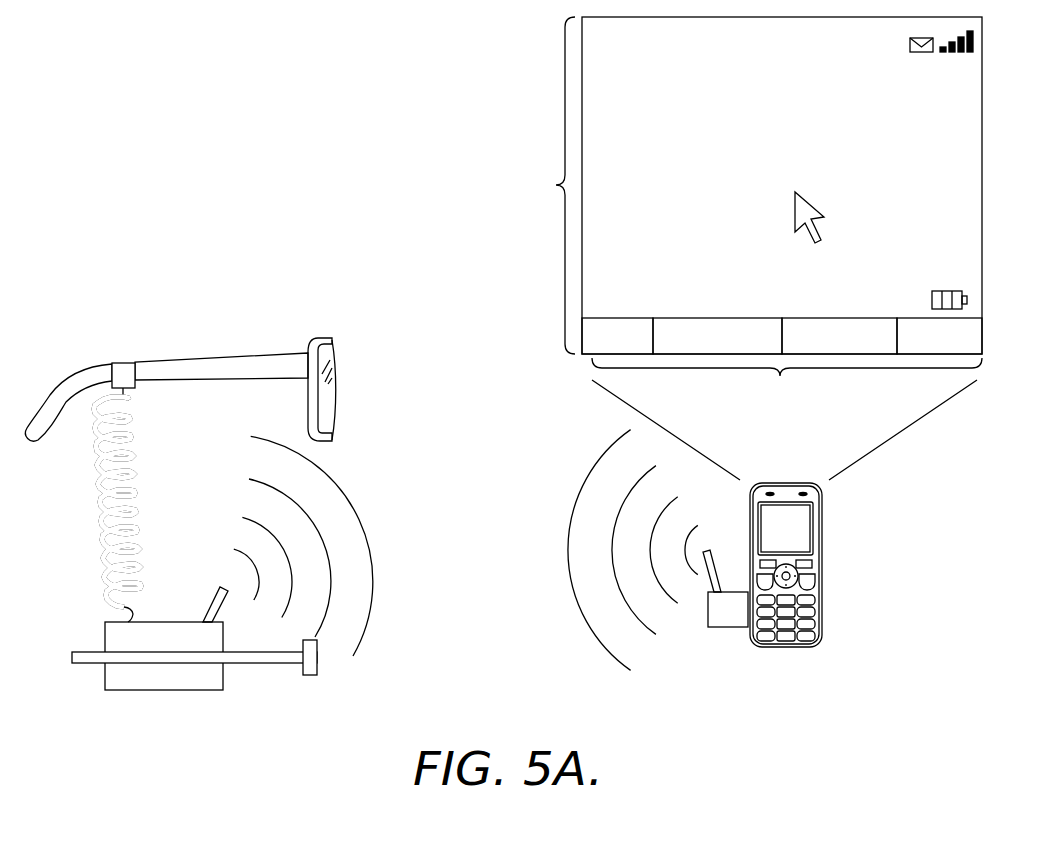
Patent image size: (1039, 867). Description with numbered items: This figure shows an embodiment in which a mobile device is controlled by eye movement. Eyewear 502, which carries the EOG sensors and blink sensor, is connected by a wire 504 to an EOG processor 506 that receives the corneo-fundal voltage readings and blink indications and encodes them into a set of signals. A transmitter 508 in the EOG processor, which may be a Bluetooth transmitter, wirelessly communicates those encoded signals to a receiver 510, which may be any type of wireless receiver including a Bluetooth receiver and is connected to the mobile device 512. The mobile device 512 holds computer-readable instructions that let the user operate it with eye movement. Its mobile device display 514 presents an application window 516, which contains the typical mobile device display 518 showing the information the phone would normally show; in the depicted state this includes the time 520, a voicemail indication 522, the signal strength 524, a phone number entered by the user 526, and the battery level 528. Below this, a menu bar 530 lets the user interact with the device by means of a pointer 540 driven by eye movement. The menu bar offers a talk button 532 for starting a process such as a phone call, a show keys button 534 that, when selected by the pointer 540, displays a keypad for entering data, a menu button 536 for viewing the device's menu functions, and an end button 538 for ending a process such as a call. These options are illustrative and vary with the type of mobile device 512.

The eyewear 502 is at (215, 356).
The wire 504 is at (130, 452).
The EOG processor 506 is at (167, 690).
The transmitter 508 is at (206, 604).
The receiver 510 is at (712, 559).
The mobile device 512 is at (822, 578).
The mobile device display 514 is at (800, 525).
The application window 516 is at (982, 110).
The typical mobile device display 518 is at (546, 185).
The time 520 is at (616, 55).
The voicemail indication 522 is at (908, 46).
The signal strength 524 is at (961, 55).
The phone number entered by the user 526 is at (813, 166).
The battery level 528 is at (946, 291).
The menu bar 530 is at (787, 381).
The talk button 532 is at (617, 318).
The show keys button 534 is at (718, 318).
The menu button 536 is at (830, 318).
The end button 538 is at (911, 318).
The pointer 540 is at (823, 211).